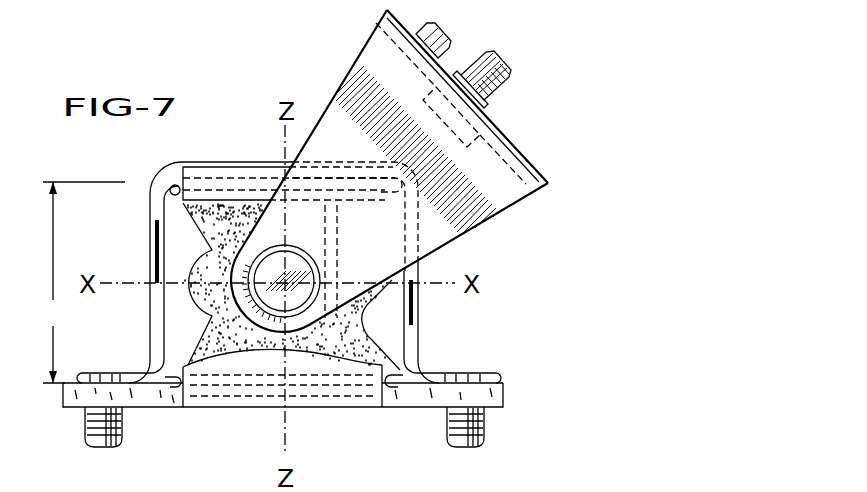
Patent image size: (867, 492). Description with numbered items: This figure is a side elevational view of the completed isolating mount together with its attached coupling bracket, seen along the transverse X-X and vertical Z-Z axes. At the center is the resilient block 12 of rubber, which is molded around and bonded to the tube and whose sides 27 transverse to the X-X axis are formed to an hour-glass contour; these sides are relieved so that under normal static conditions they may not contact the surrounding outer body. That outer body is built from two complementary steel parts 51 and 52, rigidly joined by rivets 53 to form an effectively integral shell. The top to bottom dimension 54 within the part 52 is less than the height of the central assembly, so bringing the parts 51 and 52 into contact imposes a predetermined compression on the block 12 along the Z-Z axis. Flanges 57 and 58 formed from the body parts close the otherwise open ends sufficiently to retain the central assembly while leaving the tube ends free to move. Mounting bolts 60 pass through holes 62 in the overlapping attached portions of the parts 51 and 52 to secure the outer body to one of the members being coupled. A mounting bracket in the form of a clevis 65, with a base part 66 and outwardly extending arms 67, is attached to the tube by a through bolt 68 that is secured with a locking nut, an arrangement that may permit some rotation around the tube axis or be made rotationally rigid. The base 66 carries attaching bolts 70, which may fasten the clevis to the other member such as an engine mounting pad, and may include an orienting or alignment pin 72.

The resilient block 12 is at (380, 329).
The side of the block 27 is at (190, 307).
The complementary part 51 is at (170, 405).
The complementary part 52 is at (150, 228).
The rivet 53 is at (138, 372).
The top to bottom dimension 54 is at (84, 282).
The flange 57 is at (247, 367).
The flange 58 is at (240, 173).
The mounting bolt 60 is at (85, 426).
The hole 62 is at (92, 378).
The clevis 65 is at (500, 231).
The base part 66 is at (517, 135).
The arm 67 is at (358, 58).
The through bolt 68 is at (302, 268).
The attaching bolt 70 is at (510, 60).
The alignment pin 72 is at (437, 31).